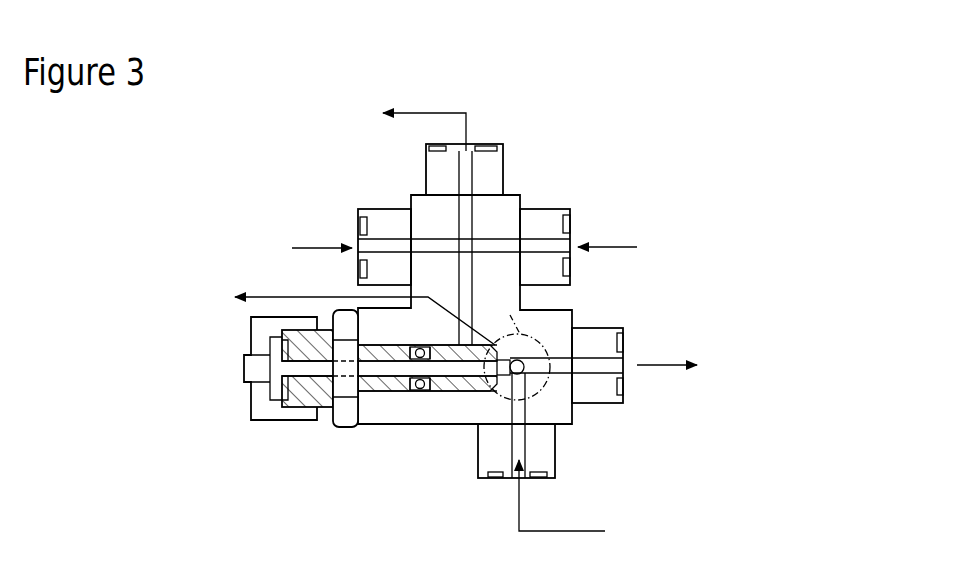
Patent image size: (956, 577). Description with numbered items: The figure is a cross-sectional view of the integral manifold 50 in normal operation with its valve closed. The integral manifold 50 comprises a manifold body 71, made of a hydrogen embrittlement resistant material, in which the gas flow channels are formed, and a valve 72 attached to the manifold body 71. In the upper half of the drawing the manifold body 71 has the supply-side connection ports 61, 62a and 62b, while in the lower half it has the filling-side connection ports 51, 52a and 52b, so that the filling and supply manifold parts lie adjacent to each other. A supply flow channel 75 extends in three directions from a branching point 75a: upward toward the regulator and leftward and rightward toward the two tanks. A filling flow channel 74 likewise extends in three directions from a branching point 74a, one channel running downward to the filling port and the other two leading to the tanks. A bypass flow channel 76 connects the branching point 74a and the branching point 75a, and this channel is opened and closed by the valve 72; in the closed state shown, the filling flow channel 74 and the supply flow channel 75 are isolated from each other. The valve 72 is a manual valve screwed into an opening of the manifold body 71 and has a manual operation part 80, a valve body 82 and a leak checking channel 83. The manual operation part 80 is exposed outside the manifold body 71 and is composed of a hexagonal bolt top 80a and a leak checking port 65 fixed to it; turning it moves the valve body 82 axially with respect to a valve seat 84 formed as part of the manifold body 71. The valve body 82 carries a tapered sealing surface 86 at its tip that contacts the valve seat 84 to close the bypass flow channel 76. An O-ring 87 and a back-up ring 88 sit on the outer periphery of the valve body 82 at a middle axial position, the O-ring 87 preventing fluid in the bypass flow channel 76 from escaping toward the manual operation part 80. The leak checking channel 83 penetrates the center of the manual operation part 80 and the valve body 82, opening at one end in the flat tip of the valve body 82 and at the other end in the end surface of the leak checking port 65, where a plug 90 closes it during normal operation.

The integral manifold 50 is at (520, 88).
The connection port 61 is at (498, 160).
The connection port 62a is at (390, 213).
The connection port 62b is at (547, 217).
The supply flow channel 75 is at (492, 246).
The branching point 75a is at (462, 246).
The connection port 52a is at (510, 315).
The manifold body 71 is at (572, 308).
The branching point 74a is at (565, 362).
The filling flow channel 74 is at (620, 334).
The valve seat 84 is at (521, 375).
The connection port 52b is at (595, 398).
The connection port 51 is at (548, 453).
The tapered sealing surface 86 is at (478, 392).
The valve 72 is at (382, 395).
The leak checking channel 83 is at (388, 362).
The back-up ring 88 is at (418, 392).
The O-ring 87 is at (425, 392).
The valve body 82 is at (460, 392).
The bypass flow channel 76 is at (462, 332).
The manual operation part 80 is at (365, 482).
The leak checking port 65 is at (302, 397).
The hexagonal bolt top 80a is at (347, 417).
The plug 90 is at (263, 407).